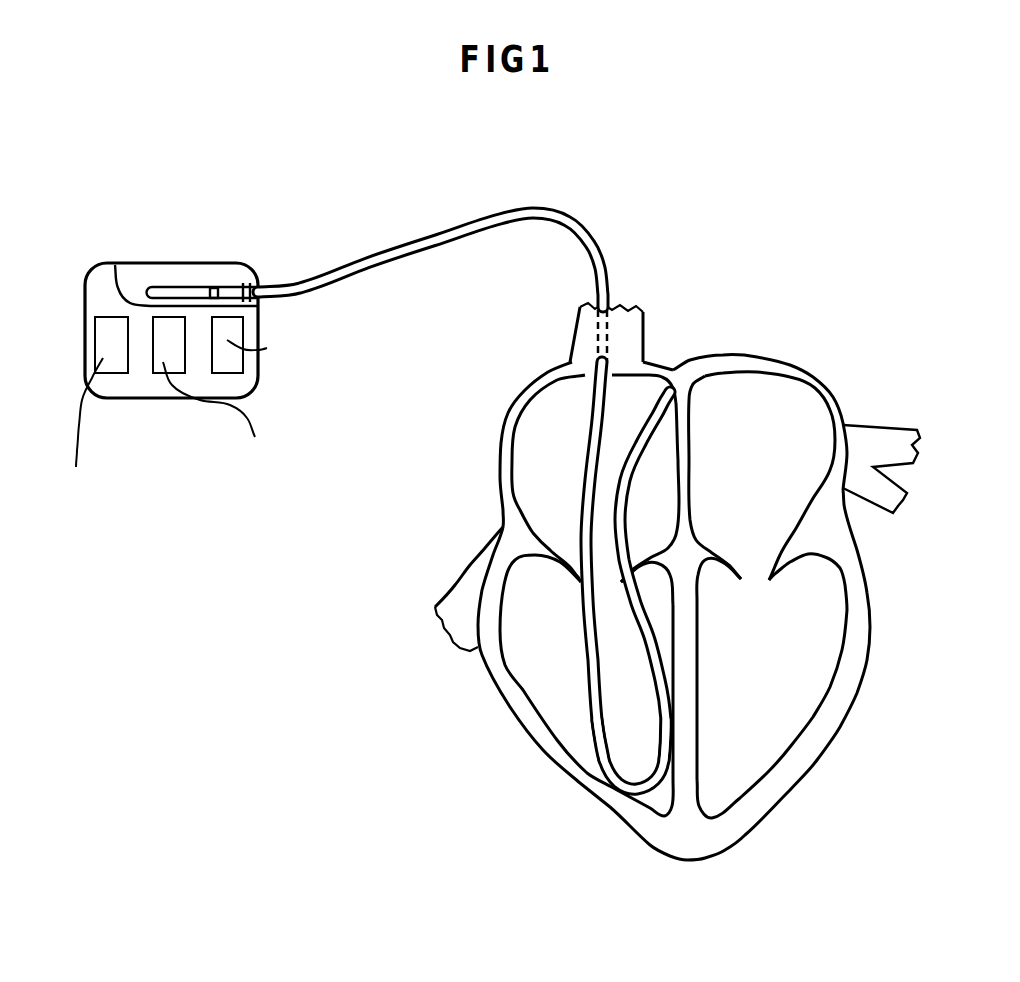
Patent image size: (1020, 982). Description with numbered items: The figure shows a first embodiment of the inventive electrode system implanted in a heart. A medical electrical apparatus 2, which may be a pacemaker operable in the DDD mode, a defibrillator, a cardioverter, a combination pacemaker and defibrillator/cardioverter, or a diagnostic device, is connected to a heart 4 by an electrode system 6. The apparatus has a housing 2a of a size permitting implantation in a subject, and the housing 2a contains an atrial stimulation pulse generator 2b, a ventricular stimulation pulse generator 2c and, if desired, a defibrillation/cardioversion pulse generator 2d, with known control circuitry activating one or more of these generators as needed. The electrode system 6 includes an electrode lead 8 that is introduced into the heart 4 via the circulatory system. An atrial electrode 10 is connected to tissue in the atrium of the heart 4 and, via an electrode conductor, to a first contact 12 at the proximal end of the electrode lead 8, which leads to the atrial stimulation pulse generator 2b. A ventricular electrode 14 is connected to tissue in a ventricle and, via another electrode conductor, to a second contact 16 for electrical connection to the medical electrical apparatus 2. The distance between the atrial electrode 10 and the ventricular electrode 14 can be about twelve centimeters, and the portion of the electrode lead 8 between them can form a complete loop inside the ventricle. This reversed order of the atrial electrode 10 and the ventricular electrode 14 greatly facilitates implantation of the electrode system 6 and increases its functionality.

The medical electrical apparatus 2 is at (72, 284).
The housing 2a is at (143, 382).
The atrial stimulation pulse generator 2b is at (100, 352).
The ventricular stimulation pulse generator 2c is at (167, 357).
The defibrillation/cardioversion pulse generator 2d is at (232, 326).
The heart 4 is at (822, 380).
The electrode system 6 is at (511, 513).
The electrode lead 8 is at (442, 243).
The atrial electrode 10 is at (673, 373).
The first contact 12 is at (176, 290).
The ventricular electrode 14 is at (612, 778).
The second contact 16 is at (210, 290).